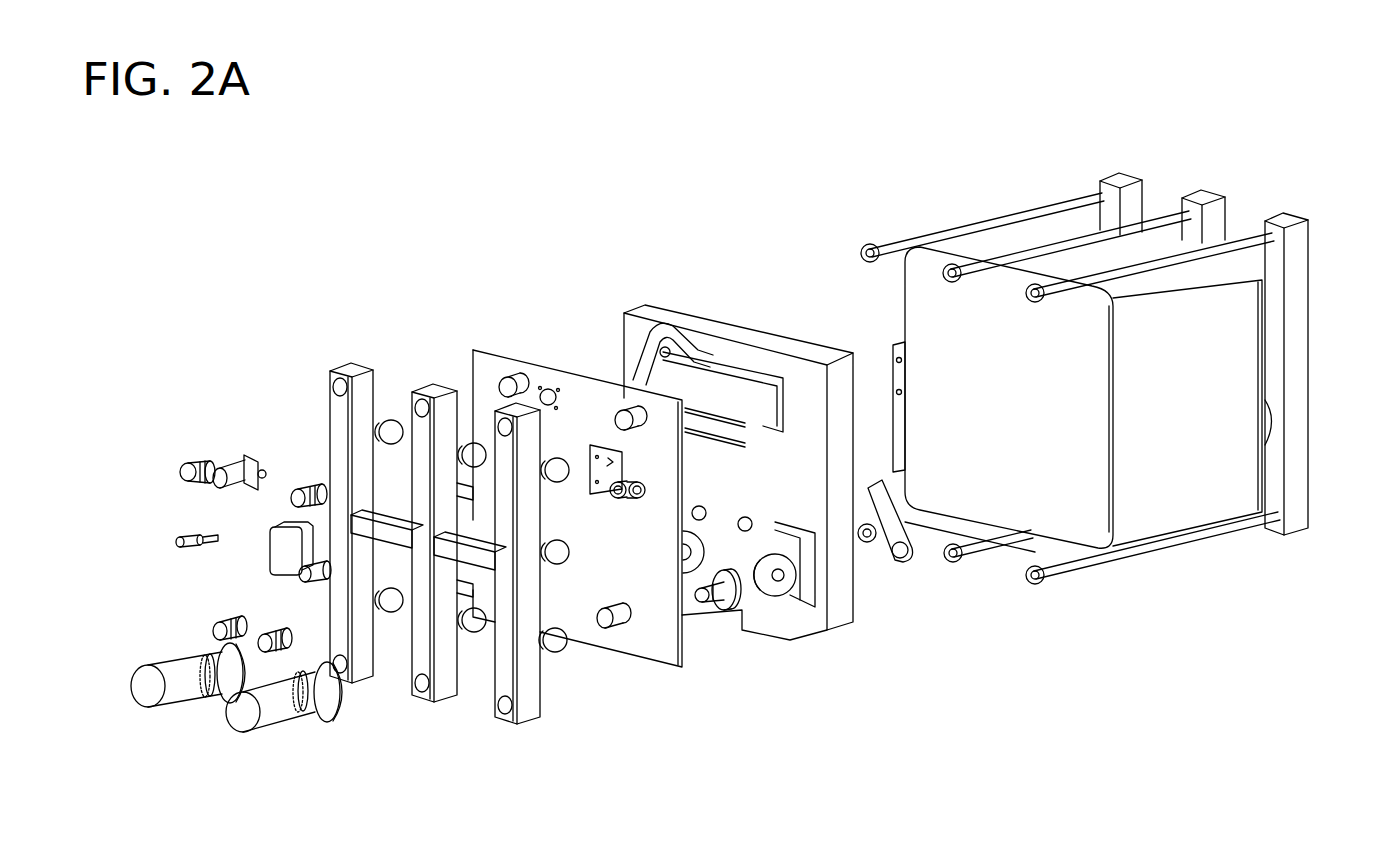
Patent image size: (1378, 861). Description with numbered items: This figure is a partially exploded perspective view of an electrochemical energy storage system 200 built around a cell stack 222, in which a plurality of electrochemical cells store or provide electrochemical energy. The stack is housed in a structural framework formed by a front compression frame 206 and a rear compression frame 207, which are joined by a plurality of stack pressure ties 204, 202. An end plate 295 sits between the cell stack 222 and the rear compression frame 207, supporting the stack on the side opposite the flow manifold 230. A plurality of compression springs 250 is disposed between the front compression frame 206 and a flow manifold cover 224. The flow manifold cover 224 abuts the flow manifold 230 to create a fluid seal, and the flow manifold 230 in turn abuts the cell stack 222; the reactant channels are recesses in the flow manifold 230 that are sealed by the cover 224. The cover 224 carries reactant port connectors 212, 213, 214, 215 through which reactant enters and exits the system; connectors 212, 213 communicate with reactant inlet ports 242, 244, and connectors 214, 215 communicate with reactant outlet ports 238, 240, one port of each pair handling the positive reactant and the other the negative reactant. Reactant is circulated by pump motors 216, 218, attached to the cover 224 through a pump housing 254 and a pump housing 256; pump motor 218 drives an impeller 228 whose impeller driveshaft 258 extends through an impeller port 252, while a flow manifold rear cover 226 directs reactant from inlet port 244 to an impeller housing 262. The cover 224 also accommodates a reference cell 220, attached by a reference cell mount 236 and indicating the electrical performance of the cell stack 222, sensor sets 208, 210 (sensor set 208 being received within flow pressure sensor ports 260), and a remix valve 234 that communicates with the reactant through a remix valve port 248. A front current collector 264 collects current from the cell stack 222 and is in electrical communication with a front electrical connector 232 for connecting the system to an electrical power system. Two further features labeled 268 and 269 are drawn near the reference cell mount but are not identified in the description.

The electrochemical energy storage system 200 is at (484, 217).
The stack pressure ties 202 is at (915, 532).
The stack pressure ties 204 is at (1150, 265).
The front compression frame 206 is at (332, 420).
The rear compression frame 207 is at (1112, 175).
The sensor set 208 is at (297, 582).
The sensor set 210 is at (183, 535).
The reactant port connector 212 is at (215, 632).
The reactant port connector 213 is at (277, 628).
The reactant port connector 214 is at (318, 488).
The reactant port connector 215 is at (185, 460).
The pump motor 216 is at (128, 698).
The pump motor 218 is at (232, 735).
The reference cell 220 is at (270, 547).
The cell stack 222 is at (1187, 413).
The flow manifold cover 224 is at (645, 657).
The flow manifold rear cover 226 is at (910, 530).
The impeller 228 is at (728, 610).
The flow manifold 230 is at (705, 318).
The front electrical connector 232 is at (890, 345).
The remix valve 234 is at (232, 462).
The reference cell mount 236 is at (603, 447).
The reactant outlet port 238 is at (508, 378).
The reactant outlet port 240 is at (628, 408).
The reactant inlet port 242 is at (605, 635).
The reactant inlet port 244 is at (702, 603).
The remix valve port 248 is at (548, 388).
The compression springs 250 is at (556, 460).
The impeller port 252 is at (563, 565).
The pump housing 254 is at (205, 655).
The pump housing 256 is at (322, 703).
The impeller driveshaft 258 is at (712, 615).
The flow pressure sensor ports 260 is at (647, 490).
The impeller housing 262 is at (780, 588).
The front current collector 264 is at (1009, 397).
The fitting 268 is at (585, 465).
The slot 269 is at (613, 462).
The end plate 295 is at (1272, 437).